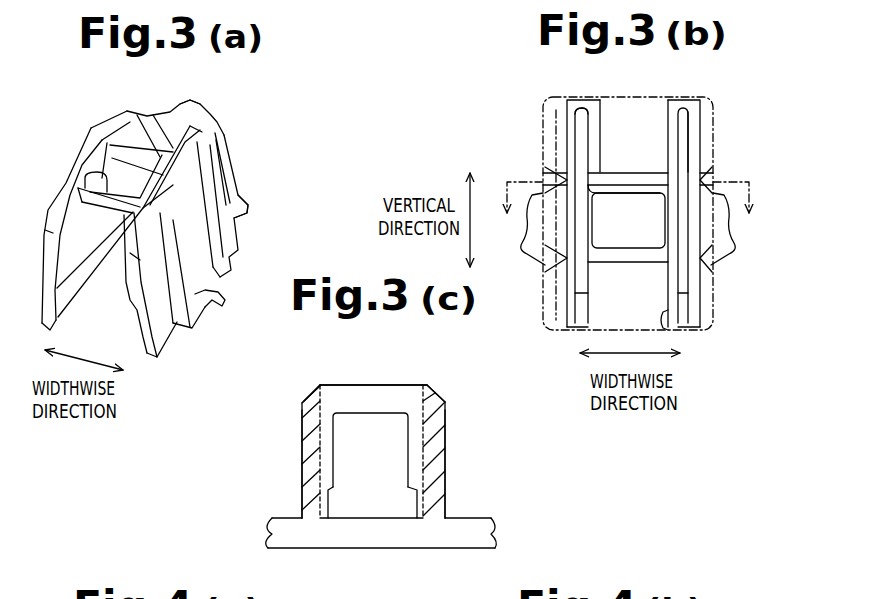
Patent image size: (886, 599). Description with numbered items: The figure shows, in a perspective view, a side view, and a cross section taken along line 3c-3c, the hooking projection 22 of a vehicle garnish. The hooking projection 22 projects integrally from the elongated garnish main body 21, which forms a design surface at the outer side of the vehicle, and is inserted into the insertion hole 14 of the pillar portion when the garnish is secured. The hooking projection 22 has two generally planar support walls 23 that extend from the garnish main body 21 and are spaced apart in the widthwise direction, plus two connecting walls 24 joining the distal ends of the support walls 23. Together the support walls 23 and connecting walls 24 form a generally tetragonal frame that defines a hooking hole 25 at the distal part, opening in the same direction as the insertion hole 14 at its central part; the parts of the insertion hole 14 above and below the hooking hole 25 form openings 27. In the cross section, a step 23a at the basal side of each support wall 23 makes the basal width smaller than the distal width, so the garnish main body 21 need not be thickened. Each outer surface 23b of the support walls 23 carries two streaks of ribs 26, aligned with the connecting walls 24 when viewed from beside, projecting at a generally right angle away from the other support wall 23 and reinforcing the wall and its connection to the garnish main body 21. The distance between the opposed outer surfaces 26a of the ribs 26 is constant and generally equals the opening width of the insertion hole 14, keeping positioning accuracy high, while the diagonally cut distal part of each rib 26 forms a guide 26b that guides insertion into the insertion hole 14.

In FIG. 3B, the insertion hole 14 is at (626, 110).
In FIG. 3C, the garnish main body 21 is at (285, 525).
In FIG. 3A, the hooking projection 22 is at (92, 127).
In FIG. 3B, the hooking projection 22 is at (558, 125).
In FIG. 3C, the hooking projection 22 is at (430, 364).
In FIG. 3A, the support wall 23 is at (197, 103).
In FIG. 3C, the support wall 23 is at (408, 452).
In FIG. 3C, the step 23a is at (415, 500).
In FIG. 3A, the outer surface 23b is at (232, 178).
In FIG. 3B, the outer surface 23b is at (565, 142).
In FIG. 3A, the connecting wall 24 is at (115, 156).
In FIG. 3B, the connecting wall 24 is at (650, 194).
In FIG. 3C, the connecting wall 24 is at (385, 388).
In FIG. 3A, the hooking hole 25 is at (109, 147).
In FIG. 3B, the hooking hole 25 is at (619, 192).
In FIG. 3A, the rib 26 is at (180, 283).
In FIG. 3B, the rib 26 is at (628, 233).
In FIG. 3C, the rib 26 is at (302, 452).
In FIG. 3C, the outer surface of rib 26a is at (302, 420).
In FIG. 3C, the guide 26b is at (310, 390).
In FIG. 3B, the opening 27 is at (598, 128).
In FIG. 3B, the section line 3c- 3c is at (629, 212).